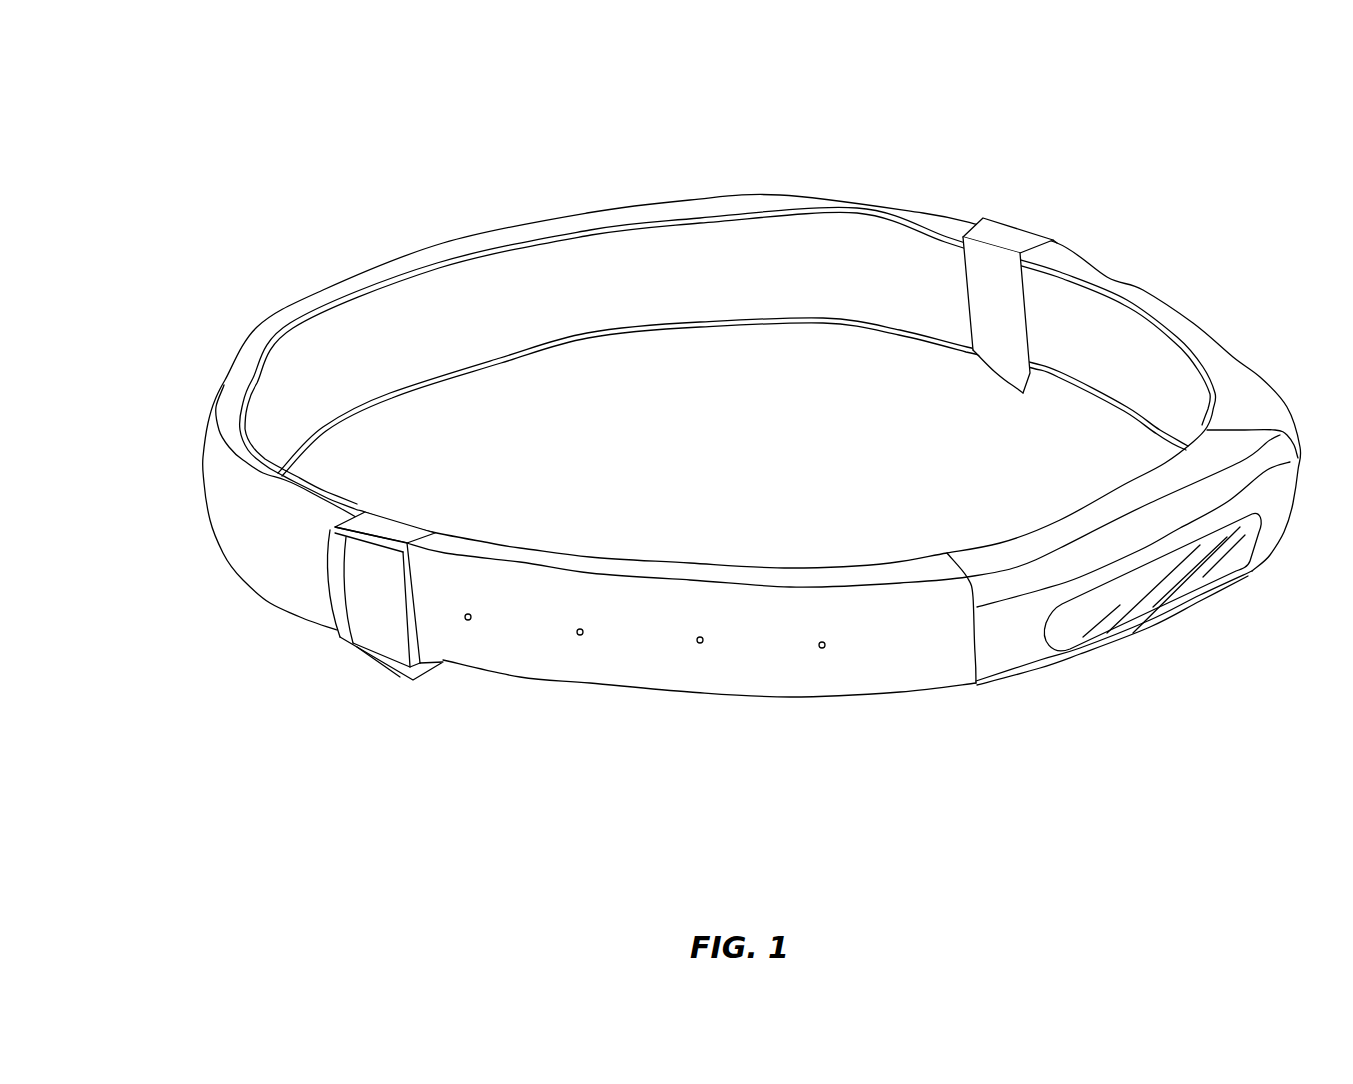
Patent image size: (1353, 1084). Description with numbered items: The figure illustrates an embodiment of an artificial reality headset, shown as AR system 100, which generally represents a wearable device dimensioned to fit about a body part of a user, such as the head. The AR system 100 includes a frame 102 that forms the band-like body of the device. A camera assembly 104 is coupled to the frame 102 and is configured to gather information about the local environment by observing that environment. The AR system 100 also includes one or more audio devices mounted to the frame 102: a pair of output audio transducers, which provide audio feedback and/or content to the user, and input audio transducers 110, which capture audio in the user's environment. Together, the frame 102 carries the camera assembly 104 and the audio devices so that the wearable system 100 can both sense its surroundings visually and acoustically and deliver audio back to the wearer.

The AR system 100 is at (170, 143).
The frame 102 is at (696, 201).
The camera assembly 104 is at (1150, 620).
The input audio transducers 110 is at (822, 709).